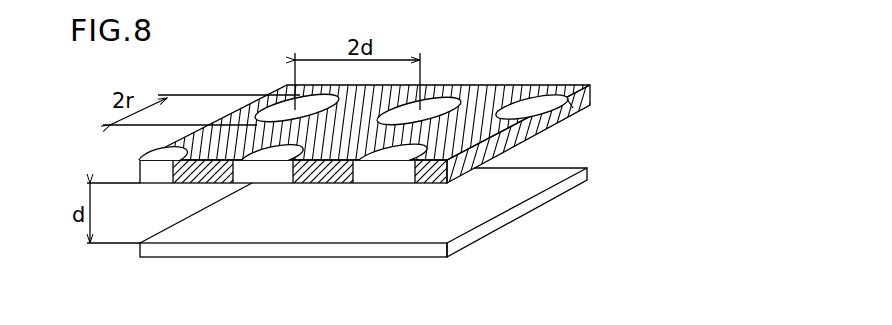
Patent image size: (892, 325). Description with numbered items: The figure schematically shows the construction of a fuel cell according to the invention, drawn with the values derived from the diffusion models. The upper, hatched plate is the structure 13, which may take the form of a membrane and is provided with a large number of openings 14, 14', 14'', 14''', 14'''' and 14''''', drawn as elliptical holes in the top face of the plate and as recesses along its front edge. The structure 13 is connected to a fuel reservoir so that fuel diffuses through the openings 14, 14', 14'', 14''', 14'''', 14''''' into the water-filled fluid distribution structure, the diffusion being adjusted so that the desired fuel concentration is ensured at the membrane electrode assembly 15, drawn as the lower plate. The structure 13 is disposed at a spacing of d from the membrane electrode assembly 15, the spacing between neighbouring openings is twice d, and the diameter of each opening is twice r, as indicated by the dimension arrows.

The structure 13 is at (498, 97).
The opening 14 is at (559, 119).
The opening 14' is at (419, 71).
The opening 14'' is at (297, 70).
The opening 14''' is at (389, 225).
The opening 14'''' is at (272, 226).
The opening 14''''' is at (119, 158).
The membrane electrode assembly 15 is at (495, 235).